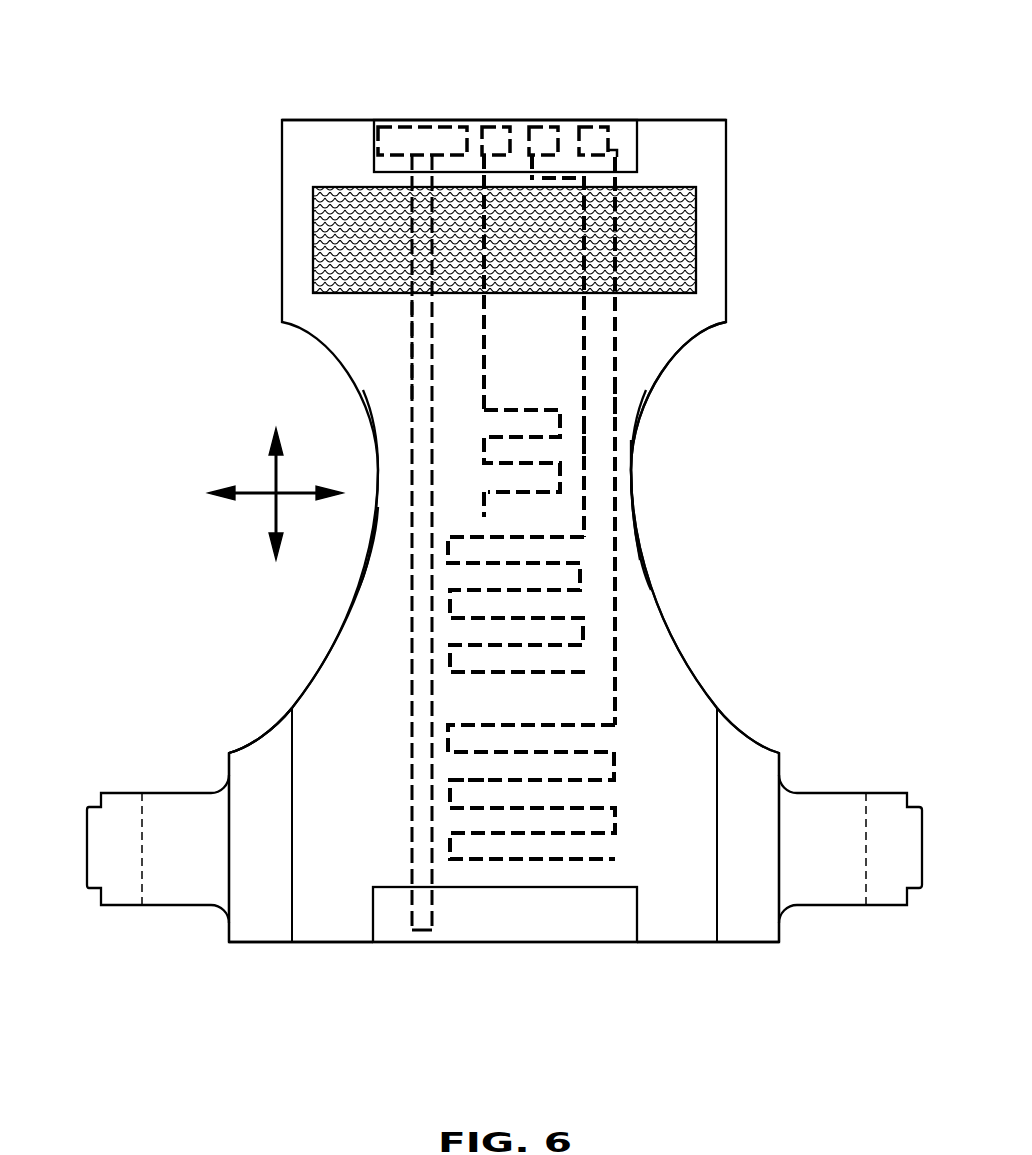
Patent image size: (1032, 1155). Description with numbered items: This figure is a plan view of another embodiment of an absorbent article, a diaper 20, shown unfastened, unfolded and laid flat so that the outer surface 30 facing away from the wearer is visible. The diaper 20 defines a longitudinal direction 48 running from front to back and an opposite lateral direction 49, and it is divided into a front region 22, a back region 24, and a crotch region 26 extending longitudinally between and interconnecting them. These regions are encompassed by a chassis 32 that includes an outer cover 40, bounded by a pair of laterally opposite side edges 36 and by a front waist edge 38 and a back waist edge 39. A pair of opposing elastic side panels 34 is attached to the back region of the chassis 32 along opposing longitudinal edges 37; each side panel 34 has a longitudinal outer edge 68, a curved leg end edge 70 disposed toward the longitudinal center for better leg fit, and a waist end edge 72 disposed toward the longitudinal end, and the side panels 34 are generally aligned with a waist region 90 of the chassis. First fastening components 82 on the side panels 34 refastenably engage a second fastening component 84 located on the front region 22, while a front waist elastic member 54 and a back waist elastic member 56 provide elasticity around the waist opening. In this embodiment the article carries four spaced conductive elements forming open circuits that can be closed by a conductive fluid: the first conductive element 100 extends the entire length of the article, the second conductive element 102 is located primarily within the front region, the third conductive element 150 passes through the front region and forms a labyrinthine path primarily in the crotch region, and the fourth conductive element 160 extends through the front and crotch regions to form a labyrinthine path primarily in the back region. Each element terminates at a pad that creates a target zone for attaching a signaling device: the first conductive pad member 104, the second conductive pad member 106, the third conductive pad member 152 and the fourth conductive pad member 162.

The diaper 20 is at (290, 92).
The front region 22 is at (600, 352).
The back region 24 is at (673, 637).
The crotch region 26 is at (627, 503).
The outer surface 30 is at (528, 716).
The chassis 32 is at (397, 623).
The elastic side panels 34 is at (702, 135).
The side edges 36 is at (360, 568).
The longitudinal edges 37 is at (293, 850).
The front waist edge 38 is at (342, 120).
The back waist edge 39 is at (368, 942).
The outer cover 40 is at (360, 705).
The longitudinal direction 48 is at (283, 463).
The lateral direction 49 is at (297, 495).
The front waist elastic member 54 is at (600, 167).
The back waist elastic member 56 is at (622, 877).
The longitudinal outer edge 68 is at (229, 812).
The leg end edge 70 is at (252, 740).
The waist end edges 72 is at (730, 942).
The first fastening components 82 is at (128, 890).
The second fastening component 84 is at (400, 270).
The waist region 90 is at (474, 792).
The first conductive element 100 is at (412, 338).
The second conductive element 102 is at (493, 318).
The first conductive pad member 104 is at (425, 120).
The second conductive pad member 106 is at (492, 120).
The third conductive element 150 is at (590, 442).
The third conductive pad member 152 is at (552, 120).
The fourth conductive element 160 is at (617, 397).
The fourth conductive pad member 162 is at (603, 120).